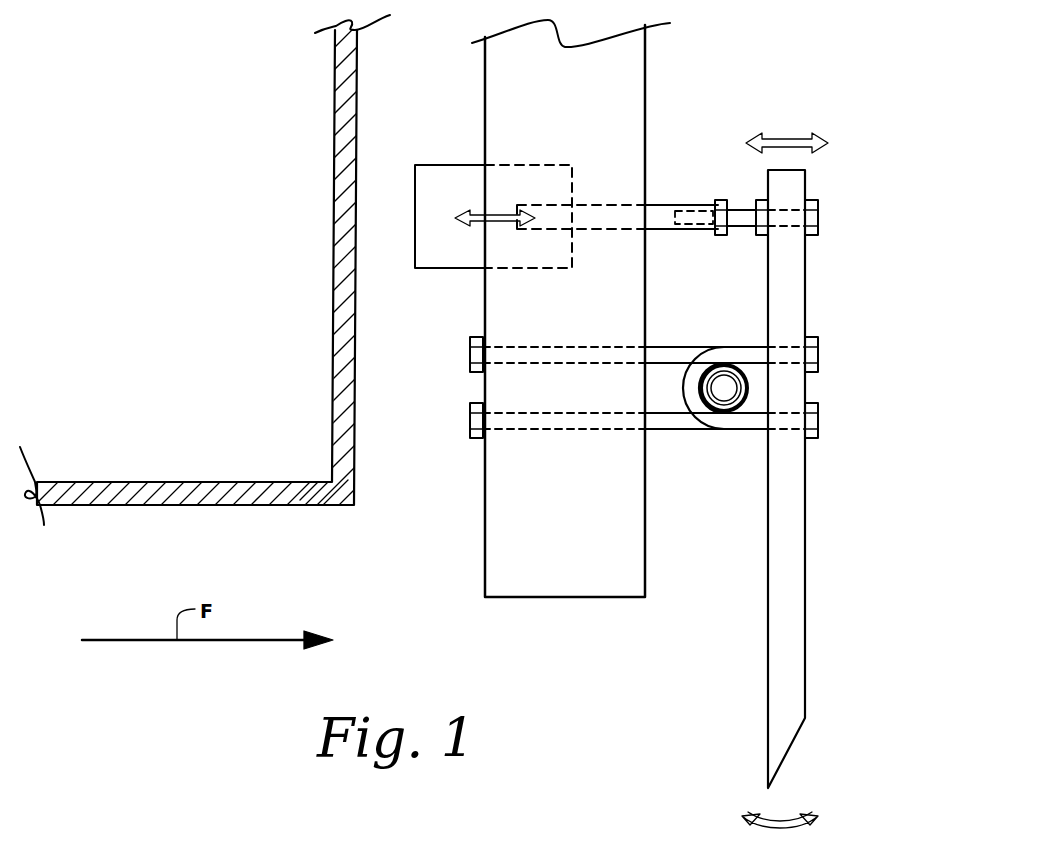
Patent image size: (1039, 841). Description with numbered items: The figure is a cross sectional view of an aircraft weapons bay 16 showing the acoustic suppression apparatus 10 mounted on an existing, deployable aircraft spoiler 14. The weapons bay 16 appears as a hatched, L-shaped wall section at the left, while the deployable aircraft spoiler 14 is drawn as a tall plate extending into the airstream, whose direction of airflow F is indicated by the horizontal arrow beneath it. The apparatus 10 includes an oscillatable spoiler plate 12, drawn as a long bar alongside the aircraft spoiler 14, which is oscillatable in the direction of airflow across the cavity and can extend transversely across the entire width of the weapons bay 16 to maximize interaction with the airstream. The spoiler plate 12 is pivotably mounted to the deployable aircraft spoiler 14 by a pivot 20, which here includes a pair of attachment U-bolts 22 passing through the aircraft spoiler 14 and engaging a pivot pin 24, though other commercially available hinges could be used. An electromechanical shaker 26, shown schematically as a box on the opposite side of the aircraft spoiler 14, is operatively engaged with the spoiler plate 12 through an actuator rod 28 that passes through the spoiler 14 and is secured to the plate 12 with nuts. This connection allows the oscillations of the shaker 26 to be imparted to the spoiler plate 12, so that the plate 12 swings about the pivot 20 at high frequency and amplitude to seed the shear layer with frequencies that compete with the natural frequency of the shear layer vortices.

The acoustic suppression apparatus 10 is at (905, 403).
The oscillatable spoiler plate 12 is at (807, 522).
The deployable aircraft spoiler 14 is at (573, 525).
The weapons bay 16 is at (356, 473).
The pivot 20 is at (814, 320).
The attachment U-bolts 22 is at (663, 347).
The pivot pin 24 is at (748, 387).
The electromechanical shaker 26 is at (456, 200).
The actuator rod 28 is at (663, 205).